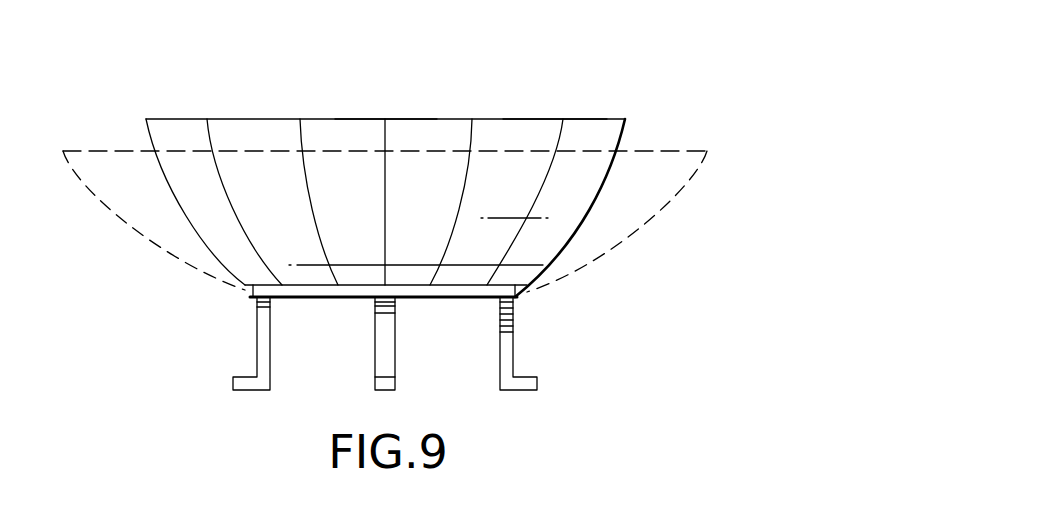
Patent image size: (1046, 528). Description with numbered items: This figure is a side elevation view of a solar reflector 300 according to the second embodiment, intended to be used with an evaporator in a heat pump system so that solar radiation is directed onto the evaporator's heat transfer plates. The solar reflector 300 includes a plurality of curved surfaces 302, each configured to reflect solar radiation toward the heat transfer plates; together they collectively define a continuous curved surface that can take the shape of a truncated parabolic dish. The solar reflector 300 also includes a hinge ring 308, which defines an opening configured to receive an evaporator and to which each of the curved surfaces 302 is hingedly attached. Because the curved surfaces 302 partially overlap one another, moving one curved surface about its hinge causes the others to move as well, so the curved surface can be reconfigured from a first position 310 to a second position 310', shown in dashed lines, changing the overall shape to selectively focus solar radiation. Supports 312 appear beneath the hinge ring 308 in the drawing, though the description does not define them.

The solar reflector 300 is at (618, 43).
The curved surfaces 302 is at (438, 119).
The hinge ring 308 is at (448, 300).
The first position of curved surface 310 is at (385, 166).
The second position of curved surface 310' is at (385, 176).
The support legs 312 is at (375, 327).